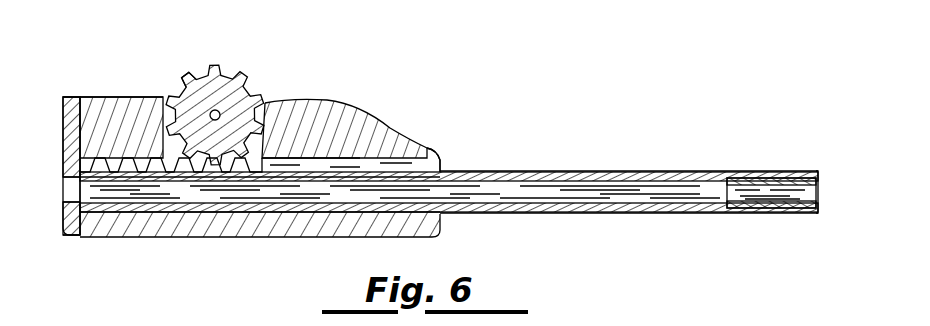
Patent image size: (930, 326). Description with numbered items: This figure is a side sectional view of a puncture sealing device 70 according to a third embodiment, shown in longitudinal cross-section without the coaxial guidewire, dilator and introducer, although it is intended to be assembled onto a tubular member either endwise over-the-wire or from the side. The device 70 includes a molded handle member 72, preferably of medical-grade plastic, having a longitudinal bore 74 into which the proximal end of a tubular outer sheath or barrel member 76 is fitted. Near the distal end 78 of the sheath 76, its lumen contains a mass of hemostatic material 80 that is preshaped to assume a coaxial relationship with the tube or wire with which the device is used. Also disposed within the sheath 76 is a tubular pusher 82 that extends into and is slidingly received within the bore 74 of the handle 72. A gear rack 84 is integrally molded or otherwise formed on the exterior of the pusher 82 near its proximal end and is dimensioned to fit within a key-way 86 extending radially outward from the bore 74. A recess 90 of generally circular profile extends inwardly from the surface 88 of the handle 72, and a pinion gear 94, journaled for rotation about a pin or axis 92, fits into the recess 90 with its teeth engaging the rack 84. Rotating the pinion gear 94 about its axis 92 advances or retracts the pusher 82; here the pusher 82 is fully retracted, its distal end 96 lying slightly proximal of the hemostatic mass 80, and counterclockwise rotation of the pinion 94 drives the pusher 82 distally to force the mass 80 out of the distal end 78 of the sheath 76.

The puncture sealing device 70 is at (400, 122).
The molded handle member 72 is at (303, 100).
The longitudinal bore 74 is at (413, 155).
The tubular outer sheath or barrel member 76 is at (483, 168).
The distal end 78 is at (818, 170).
The mass of hemostatic material 80 is at (778, 190).
The tubular pusher 82 is at (543, 186).
The gear rack 84 is at (78, 97).
The key-way 86 is at (363, 155).
The surface 88 is at (125, 97).
The recess 90 is at (263, 103).
The pin or axis 92 is at (218, 110).
The pinion gear 94 is at (183, 82).
The distal end 96 is at (740, 178).